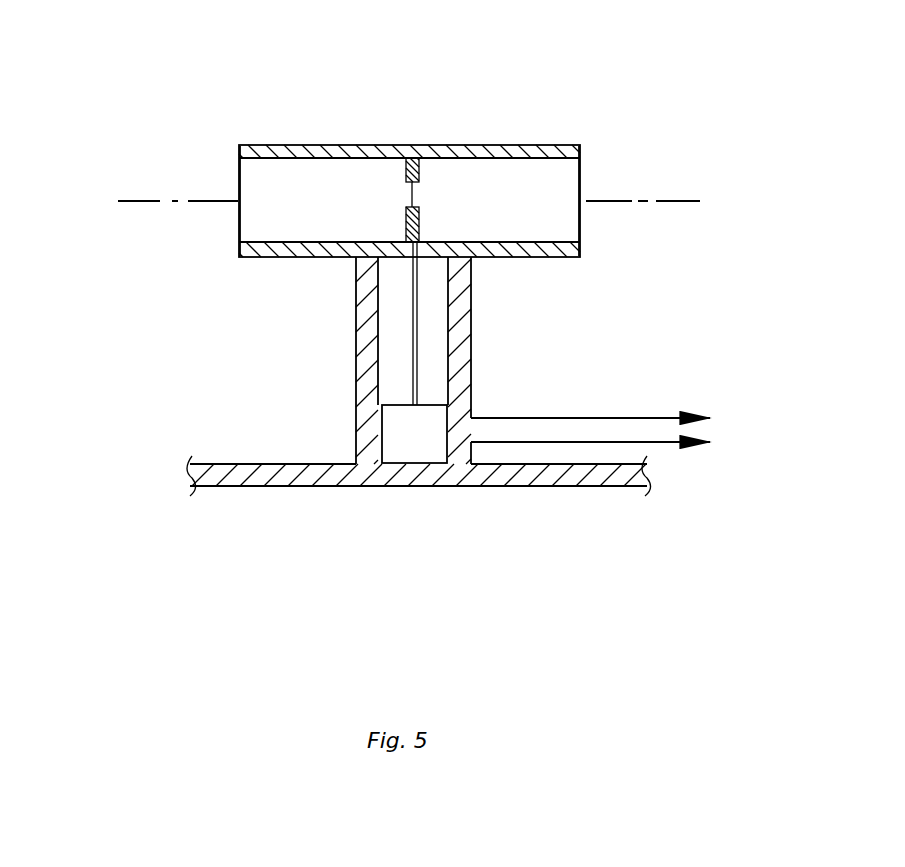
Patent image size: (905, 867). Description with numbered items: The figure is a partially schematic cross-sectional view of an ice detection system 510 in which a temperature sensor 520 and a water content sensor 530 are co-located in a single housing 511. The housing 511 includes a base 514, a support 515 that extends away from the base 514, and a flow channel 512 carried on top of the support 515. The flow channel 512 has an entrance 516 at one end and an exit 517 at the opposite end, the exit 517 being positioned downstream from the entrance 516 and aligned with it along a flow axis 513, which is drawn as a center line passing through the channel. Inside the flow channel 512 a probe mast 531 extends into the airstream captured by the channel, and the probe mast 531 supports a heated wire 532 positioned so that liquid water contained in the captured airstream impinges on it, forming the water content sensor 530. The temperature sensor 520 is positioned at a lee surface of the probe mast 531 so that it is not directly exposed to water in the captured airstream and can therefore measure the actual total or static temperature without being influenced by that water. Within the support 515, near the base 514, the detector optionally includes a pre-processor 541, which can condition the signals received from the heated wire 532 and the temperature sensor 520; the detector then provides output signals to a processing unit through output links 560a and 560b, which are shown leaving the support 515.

The ice detection system 510 is at (532, 60).
The housing 511 is at (200, 112).
The flow channel 512 is at (543, 143).
The flow axis 513 is at (152, 200).
The base 514 is at (270, 481).
The support 515 is at (472, 362).
The entrance 516 is at (240, 232).
The exit 517 is at (580, 222).
The temperature sensor 520 is at (457, 245).
The water content sensor 530 is at (447, 198).
The probe mast 531 is at (410, 225).
The heated wire 532 is at (413, 197).
The pre-processor 541 is at (390, 430).
The output link 560a is at (577, 442).
The output link 560b is at (612, 418).